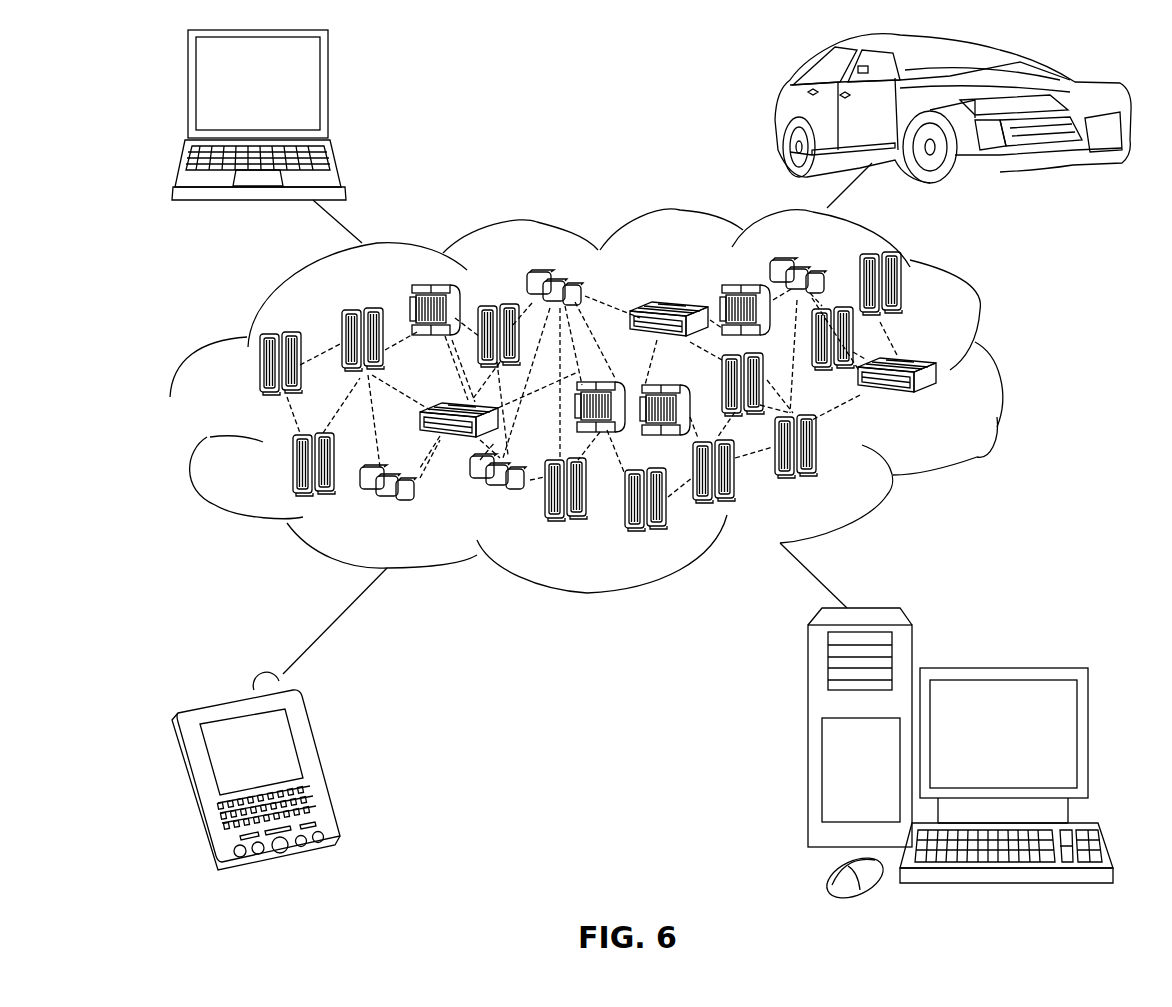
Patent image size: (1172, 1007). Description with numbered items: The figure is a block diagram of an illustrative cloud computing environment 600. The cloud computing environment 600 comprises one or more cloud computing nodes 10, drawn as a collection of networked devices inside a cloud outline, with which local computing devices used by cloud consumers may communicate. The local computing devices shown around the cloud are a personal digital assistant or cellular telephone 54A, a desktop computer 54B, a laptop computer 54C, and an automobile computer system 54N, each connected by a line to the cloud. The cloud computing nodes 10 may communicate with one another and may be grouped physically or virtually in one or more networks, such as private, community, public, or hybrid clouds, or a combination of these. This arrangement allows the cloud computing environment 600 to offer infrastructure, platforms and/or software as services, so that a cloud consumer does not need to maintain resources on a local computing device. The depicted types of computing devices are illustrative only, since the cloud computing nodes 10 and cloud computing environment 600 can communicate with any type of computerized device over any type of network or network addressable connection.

The cloud computing environment 600 is at (623, 401).
The cloud computing nodes 10 is at (942, 406).
The personal digital assistant (PDA) or cellular telephone 54A is at (322, 766).
The desktop computer 54B is at (1000, 667).
The laptop computer 54C is at (328, 93).
The automobile computer system 54N is at (772, 108).